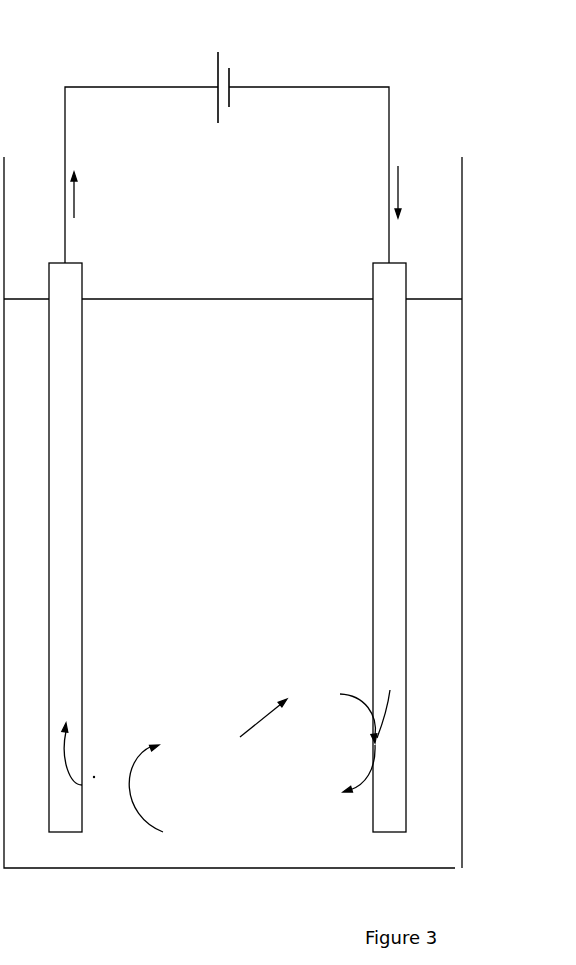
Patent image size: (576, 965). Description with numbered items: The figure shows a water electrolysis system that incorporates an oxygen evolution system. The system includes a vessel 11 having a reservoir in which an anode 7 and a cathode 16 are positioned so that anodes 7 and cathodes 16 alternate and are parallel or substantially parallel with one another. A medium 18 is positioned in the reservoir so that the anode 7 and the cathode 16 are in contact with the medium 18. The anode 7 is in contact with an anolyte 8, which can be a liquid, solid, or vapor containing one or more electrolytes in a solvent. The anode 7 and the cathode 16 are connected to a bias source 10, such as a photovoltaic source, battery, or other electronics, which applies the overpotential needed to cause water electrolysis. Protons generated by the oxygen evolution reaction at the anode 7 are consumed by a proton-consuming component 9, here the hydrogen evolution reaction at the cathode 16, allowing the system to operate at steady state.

The bias source 10 is at (198, 60).
The anode 7 is at (49, 495).
The anolyte 8 is at (97, 467).
The medium 18 is at (217, 342).
The proton-consuming component 9 is at (326, 648).
The cathode 16 is at (407, 443).
The vessel 11 is at (437, 725).